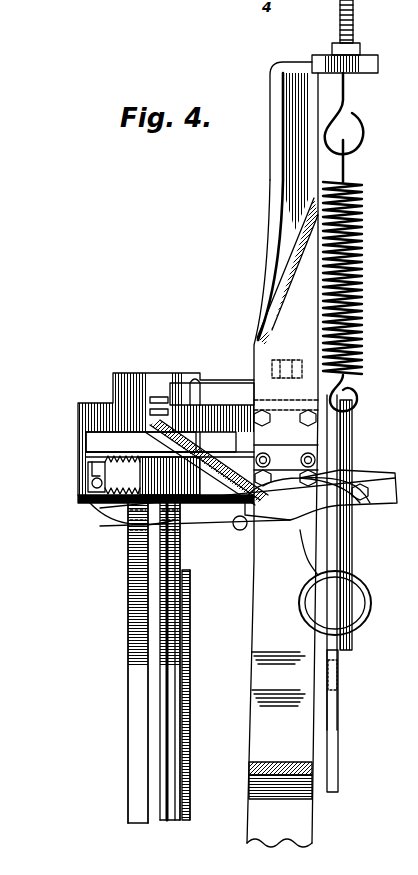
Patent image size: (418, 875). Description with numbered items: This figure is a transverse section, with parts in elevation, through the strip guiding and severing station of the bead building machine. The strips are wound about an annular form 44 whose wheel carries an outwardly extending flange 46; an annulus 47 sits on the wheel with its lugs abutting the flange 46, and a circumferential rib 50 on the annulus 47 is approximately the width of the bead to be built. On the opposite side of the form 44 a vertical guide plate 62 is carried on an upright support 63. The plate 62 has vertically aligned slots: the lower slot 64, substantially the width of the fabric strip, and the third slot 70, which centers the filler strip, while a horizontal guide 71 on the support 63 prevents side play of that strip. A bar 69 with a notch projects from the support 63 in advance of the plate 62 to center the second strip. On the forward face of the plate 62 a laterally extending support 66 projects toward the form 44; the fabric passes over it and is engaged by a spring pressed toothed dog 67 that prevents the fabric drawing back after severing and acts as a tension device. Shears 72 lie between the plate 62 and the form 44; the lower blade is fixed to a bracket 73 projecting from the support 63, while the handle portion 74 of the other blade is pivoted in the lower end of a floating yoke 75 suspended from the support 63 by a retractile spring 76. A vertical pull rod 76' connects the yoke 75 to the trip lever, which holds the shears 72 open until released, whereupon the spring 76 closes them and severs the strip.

The annular form 44 is at (128, 712).
The flange 46 is at (185, 748).
The annulus 47 is at (128, 622).
The rib 50 is at (148, 782).
The guide plate 62 is at (82, 405).
The support 63 is at (312, 810).
The lower slot 64 is at (108, 510).
The laterally extending support 66 is at (78, 497).
The spring pressed toothed dog 67 is at (92, 480).
The bar 69 is at (85, 445).
The third slot 70 is at (160, 396).
The horizontal guide 71 is at (210, 385).
The shears 72 is at (165, 425).
The bracket 73 is at (395, 478).
The handle portion 74 is at (370, 622).
The floating yoke 75 is at (357, 430).
The retractile spring 76 is at (365, 278).
The vertical pull rod 76' is at (361, 721).